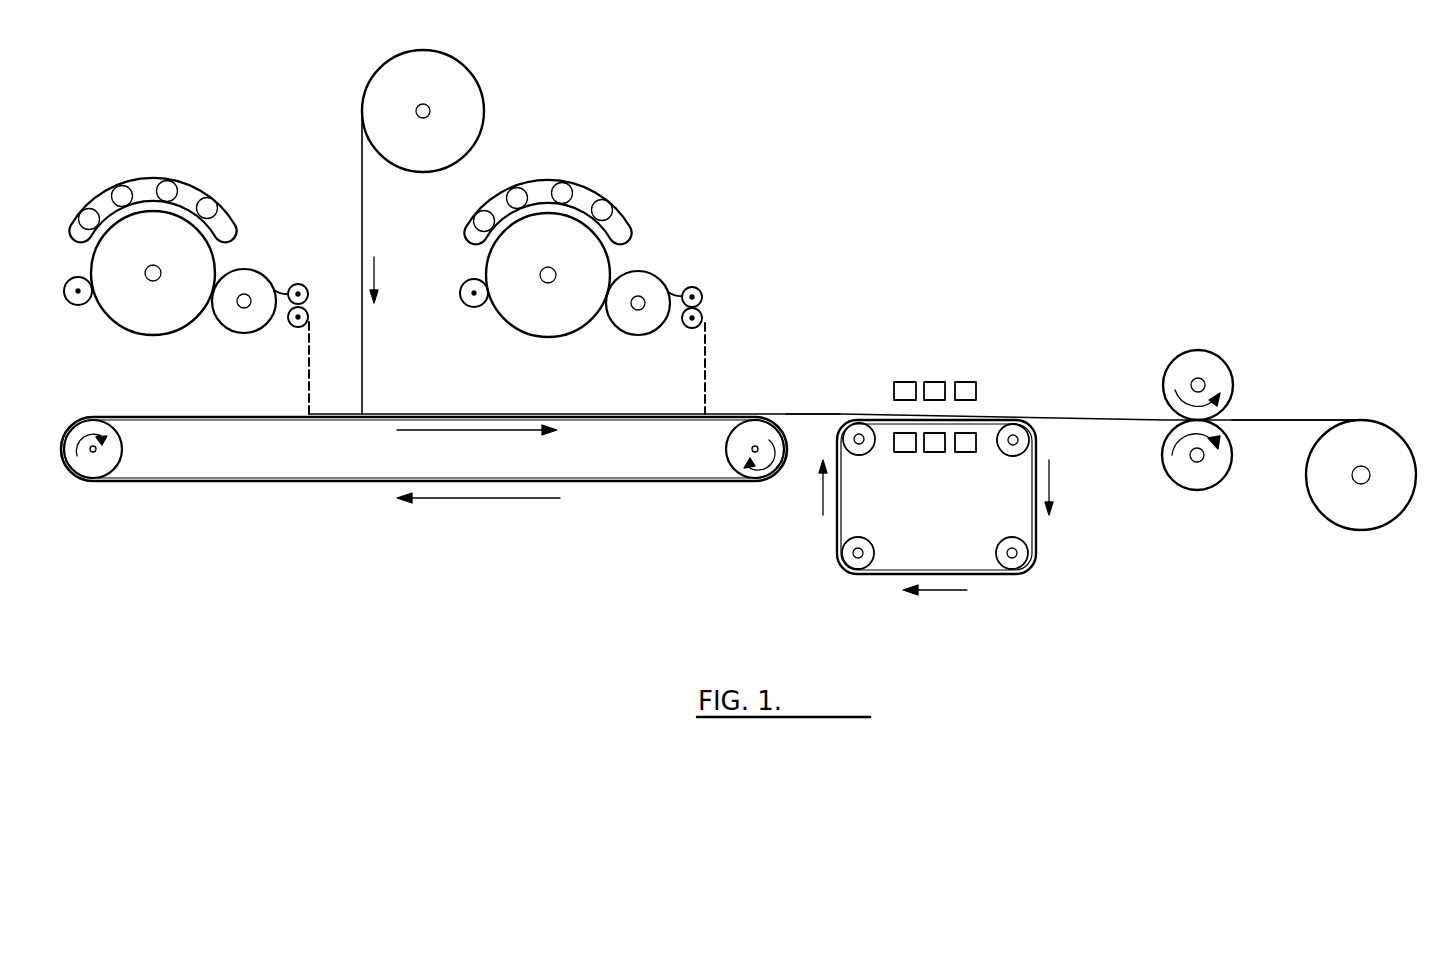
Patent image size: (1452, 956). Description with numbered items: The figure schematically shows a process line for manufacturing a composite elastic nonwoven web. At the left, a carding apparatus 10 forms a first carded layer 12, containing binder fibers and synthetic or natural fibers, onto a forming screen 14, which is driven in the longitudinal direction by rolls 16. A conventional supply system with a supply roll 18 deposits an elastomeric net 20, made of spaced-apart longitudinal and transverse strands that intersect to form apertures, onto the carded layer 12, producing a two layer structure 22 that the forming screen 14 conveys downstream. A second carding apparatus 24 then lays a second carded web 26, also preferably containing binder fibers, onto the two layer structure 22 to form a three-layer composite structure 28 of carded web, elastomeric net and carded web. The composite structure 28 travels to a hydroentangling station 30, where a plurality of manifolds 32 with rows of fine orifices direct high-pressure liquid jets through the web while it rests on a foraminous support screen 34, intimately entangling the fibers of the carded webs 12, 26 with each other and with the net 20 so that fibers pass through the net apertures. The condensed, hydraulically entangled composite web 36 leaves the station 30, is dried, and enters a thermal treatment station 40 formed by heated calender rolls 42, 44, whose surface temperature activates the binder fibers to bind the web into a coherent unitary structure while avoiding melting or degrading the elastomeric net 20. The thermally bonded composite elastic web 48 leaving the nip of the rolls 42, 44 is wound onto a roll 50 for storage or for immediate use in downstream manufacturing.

The carding apparatus 10 is at (190, 181).
The first carded layer 12 is at (309, 360).
The forming screen 14 is at (266, 422).
The rolls 16 is at (117, 458).
The supply roll 18 is at (464, 78).
The elastomeric net 20 is at (362, 265).
The two layer structure 22 is at (480, 413).
The second carding apparatus 24 is at (591, 210).
The second carded web 26 is at (707, 350).
The three-layer composite structure 28 is at (768, 412).
The hydroentangling station 30 is at (937, 438).
The manifolds 32 is at (905, 381).
The foraminous support screen 34 is at (869, 451).
The hydraulically entangled composite web 36 is at (1015, 413).
The thermal treatment station 40 is at (1214, 382).
The heated calender roll 42 is at (1226, 375).
The heated calender roll 44 is at (1227, 458).
The composite elastic web 48 is at (1308, 418).
The roll 50 is at (1387, 440).